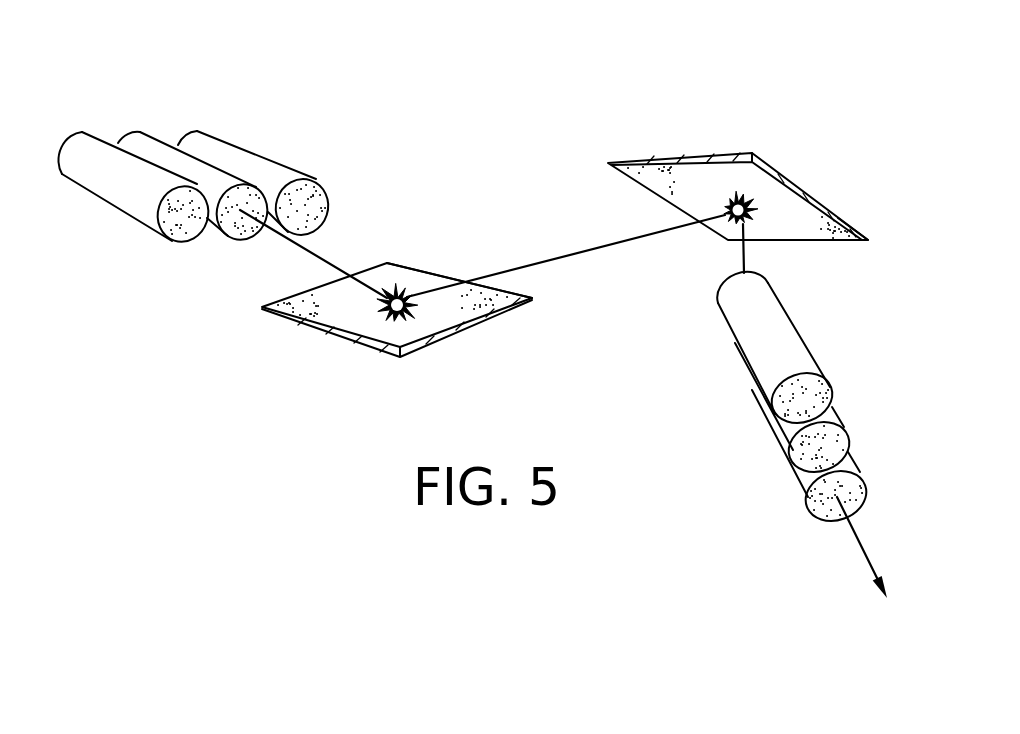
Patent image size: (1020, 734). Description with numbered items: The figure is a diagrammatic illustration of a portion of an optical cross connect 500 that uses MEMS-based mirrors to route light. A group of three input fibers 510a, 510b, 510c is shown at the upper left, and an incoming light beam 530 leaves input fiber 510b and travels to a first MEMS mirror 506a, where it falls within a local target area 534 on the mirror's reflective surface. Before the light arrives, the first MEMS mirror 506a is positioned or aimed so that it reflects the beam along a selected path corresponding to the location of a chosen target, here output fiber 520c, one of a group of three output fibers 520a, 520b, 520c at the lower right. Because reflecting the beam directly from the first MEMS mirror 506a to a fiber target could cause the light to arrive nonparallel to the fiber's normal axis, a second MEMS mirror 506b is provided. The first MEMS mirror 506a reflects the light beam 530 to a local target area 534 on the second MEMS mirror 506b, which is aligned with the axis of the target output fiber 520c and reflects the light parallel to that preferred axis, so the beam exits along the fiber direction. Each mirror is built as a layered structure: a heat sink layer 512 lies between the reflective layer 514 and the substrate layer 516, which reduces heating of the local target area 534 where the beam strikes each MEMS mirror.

The optical cross connect 500 is at (533, 71).
The input fiber 510a is at (83, 143).
The input fiber 510b is at (157, 145).
The input fiber 510c is at (230, 150).
The first MEMS mirror 506a is at (240, 283).
The second MEMS mirror 506b is at (766, 115).
The heat sink layer 512 is at (380, 352).
The reflective layer 514 is at (502, 287).
The substrate layer 516 is at (310, 334).
The light beam 530 is at (333, 262).
The local target area 534 is at (394, 277).
The output fiber 520a is at (813, 371).
The output fiber 520b is at (832, 416).
The output fiber 520c is at (853, 463).